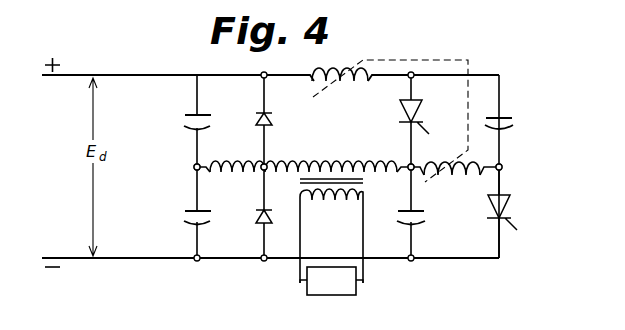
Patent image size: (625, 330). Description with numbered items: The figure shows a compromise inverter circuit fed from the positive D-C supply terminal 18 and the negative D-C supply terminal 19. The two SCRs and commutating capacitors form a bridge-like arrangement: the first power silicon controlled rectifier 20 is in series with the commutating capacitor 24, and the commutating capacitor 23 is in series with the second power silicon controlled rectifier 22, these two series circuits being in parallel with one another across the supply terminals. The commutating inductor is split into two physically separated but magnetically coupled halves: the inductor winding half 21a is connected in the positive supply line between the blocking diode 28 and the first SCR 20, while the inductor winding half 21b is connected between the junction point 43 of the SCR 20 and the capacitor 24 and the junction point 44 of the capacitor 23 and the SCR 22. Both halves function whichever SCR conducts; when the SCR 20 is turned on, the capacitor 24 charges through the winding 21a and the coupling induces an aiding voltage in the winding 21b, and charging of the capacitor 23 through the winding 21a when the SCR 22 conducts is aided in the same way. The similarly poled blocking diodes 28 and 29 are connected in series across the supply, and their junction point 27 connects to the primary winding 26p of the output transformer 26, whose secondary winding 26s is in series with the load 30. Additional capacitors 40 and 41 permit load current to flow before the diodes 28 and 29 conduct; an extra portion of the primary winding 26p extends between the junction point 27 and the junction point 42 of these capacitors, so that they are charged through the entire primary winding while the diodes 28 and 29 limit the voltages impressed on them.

The positive D-C supply terminal 18 is at (123, 75).
The negative D-C supply terminal 19 is at (122, 258).
The first power silicon controlled rectifier 20 is at (420, 110).
The inductor winding half 21a is at (336, 84).
The inductor winding half 21b is at (453, 178).
The second power silicon controlled rectifier 22 is at (510, 206).
The commutating capacitor 23 is at (508, 120).
The commutating capacitor 24 is at (417, 223).
The output transformer 26 is at (303, 207).
The primary winding 26p is at (339, 161).
The secondary winding 26s is at (333, 199).
The junction point 27 is at (262, 170).
The blocking diode 28 is at (260, 115).
The blocking diode 29 is at (260, 219).
The load 30 is at (307, 288).
The capacitor 40 is at (191, 114).
The capacitor 41 is at (190, 210).
The junction point 42 is at (194, 166).
The junction point 43 is at (409, 170).
The junction point 44 is at (503, 167).